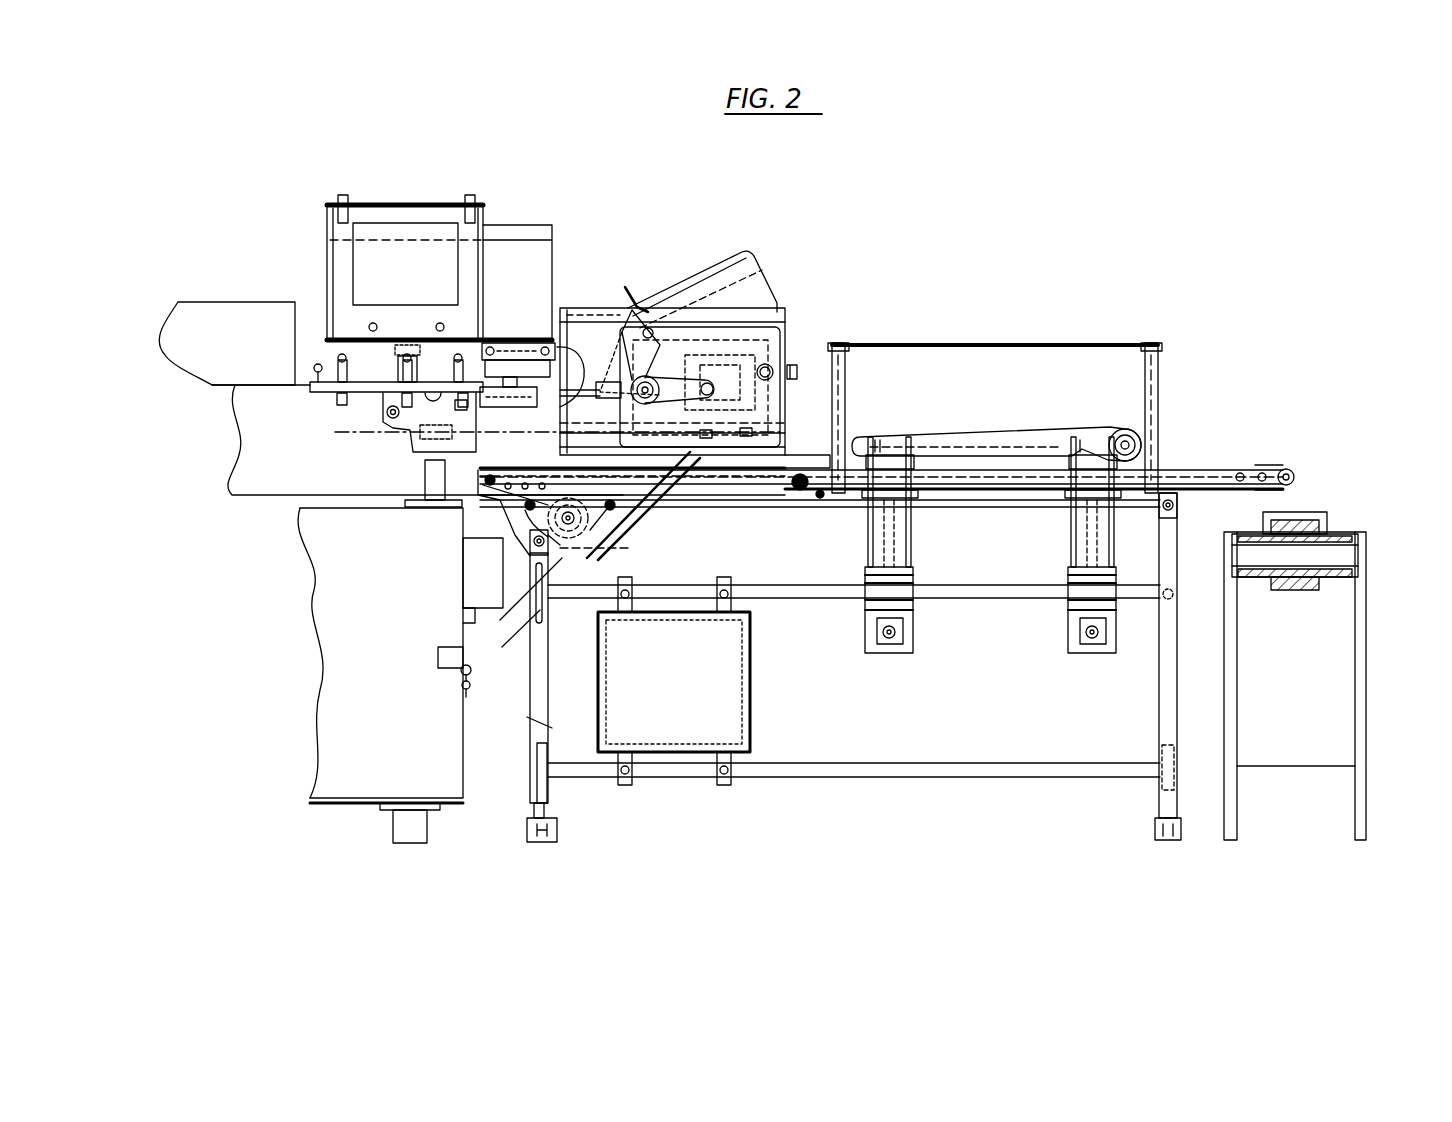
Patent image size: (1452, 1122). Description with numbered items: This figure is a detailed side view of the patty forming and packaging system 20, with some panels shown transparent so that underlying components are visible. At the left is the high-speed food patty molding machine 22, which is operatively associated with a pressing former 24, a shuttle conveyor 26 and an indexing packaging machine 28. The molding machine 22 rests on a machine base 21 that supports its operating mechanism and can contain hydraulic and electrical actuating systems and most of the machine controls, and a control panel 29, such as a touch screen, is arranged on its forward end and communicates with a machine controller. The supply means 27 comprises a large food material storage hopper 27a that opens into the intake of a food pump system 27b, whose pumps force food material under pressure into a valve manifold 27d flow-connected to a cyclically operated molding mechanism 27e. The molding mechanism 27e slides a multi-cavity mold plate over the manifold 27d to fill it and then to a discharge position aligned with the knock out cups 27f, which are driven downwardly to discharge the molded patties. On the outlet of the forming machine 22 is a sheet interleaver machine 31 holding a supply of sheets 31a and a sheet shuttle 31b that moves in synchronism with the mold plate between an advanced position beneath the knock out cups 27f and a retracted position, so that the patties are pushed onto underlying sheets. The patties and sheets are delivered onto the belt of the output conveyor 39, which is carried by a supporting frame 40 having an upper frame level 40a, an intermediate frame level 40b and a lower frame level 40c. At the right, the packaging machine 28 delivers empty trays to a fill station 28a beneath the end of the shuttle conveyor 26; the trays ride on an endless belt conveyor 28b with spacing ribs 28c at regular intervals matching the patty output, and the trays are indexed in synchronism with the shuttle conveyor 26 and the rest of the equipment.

The system 20 is at (922, 316).
The machine base 21 is at (465, 778).
The high-speed food patty molding machine 22 is at (568, 298).
The pressing former 24 is at (950, 426).
The shuttle conveyor 26 is at (1250, 455).
The supply means 27 is at (196, 297).
The food material storage hopper 27a is at (245, 302).
The food pump system 27b is at (330, 432).
The valve manifold 27d is at (405, 433).
The molding mechanism 27e is at (436, 374).
The knock out cups 27f is at (548, 368).
The indexing packaging machine 28 is at (1394, 518).
The fill station 28a is at (1298, 516).
The endless belt conveyor 28b is at (1343, 577).
The spacing ribs 28c is at (1312, 518).
The control panel 29 is at (352, 283).
The sheet interleaver machine 31 is at (683, 318).
The supply of sheets 31a is at (752, 276).
The sheet shuttle 31b is at (597, 384).
The output conveyor 39 is at (818, 454).
The supporting frame 40 is at (768, 580).
The upper frame level 40a is at (970, 503).
The intermediate frame level 40b is at (965, 603).
The lower frame level 40c is at (950, 763).